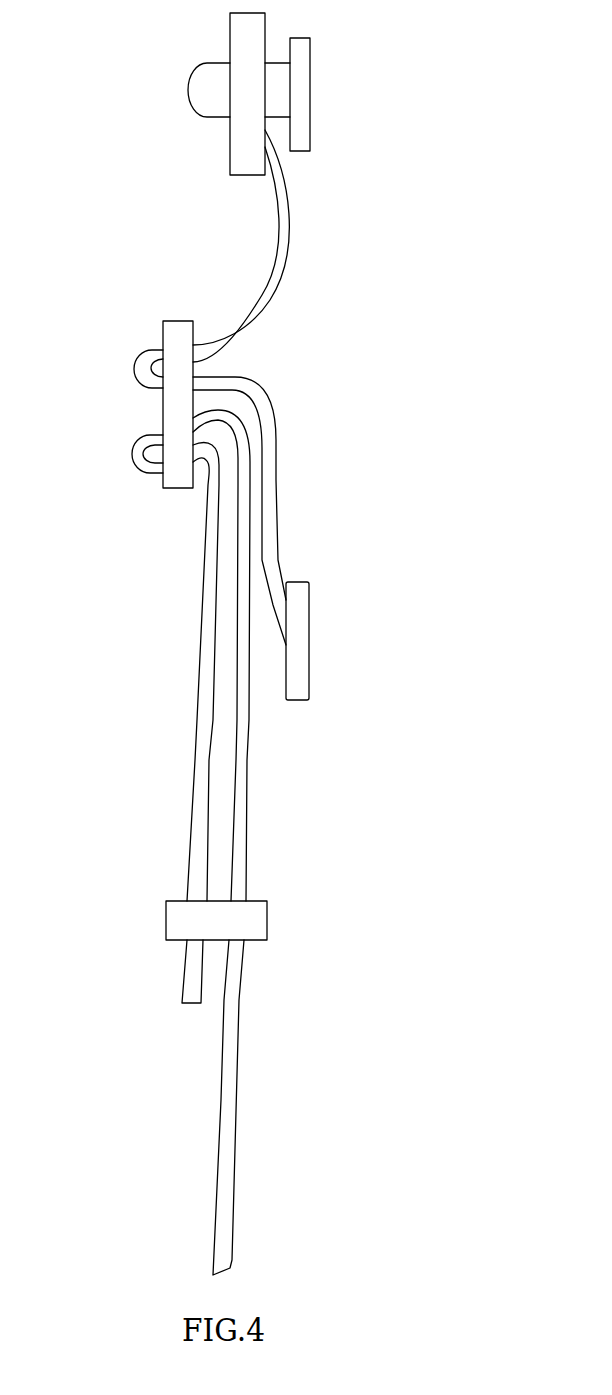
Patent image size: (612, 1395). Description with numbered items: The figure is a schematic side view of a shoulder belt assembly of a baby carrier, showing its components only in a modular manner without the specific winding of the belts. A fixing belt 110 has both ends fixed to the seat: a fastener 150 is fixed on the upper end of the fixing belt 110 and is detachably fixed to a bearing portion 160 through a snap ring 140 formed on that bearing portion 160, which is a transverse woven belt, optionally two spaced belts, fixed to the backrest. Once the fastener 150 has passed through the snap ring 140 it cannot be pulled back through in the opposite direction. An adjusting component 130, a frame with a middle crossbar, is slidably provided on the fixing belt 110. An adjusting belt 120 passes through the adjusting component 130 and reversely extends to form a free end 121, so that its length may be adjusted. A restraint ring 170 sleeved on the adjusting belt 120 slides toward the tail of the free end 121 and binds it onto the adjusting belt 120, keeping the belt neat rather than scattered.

The fixing belt 110 is at (275, 252).
The adjusting belt 120 is at (227, 1098).
The free end 121 is at (198, 790).
The adjusting component 130 is at (175, 405).
The snap ring 140 is at (218, 85).
The fastener 150 is at (236, 24).
The bearing portion 160 is at (297, 75).
The restraint ring 170 is at (177, 918).